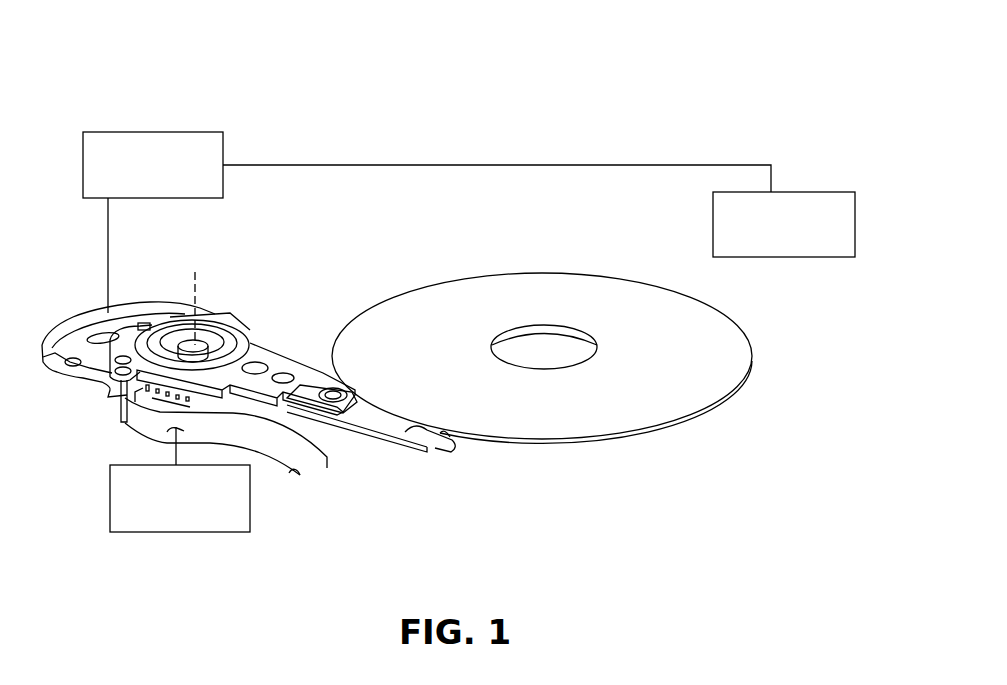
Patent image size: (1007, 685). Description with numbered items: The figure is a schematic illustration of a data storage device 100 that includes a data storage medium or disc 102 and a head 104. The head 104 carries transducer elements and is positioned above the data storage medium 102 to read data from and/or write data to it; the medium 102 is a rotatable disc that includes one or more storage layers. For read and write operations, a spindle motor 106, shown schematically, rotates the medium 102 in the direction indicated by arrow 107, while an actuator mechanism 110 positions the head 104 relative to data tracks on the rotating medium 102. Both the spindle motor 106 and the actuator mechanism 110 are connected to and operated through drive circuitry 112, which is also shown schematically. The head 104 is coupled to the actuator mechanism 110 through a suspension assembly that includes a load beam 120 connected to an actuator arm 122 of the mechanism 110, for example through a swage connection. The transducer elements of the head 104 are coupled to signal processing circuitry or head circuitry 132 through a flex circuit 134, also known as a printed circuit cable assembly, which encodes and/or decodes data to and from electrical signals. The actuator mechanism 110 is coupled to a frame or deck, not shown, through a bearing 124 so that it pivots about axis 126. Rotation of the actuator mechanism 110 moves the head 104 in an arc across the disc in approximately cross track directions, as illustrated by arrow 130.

The data storage device 100 is at (712, 66).
The data storage medium 102 is at (702, 322).
The head 104 is at (450, 442).
The spindle motor 106 is at (819, 192).
The arrow 107 is at (460, 295).
The actuator mechanism 110 is at (239, 311).
The drive circuitry 112 is at (193, 132).
The load beam 120 is at (358, 419).
The actuator arm 122 is at (302, 358).
The bearing 124 is at (158, 302).
The axis 126 is at (200, 283).
The arrow 130 is at (496, 420).
The head circuitry 132 is at (110, 500).
The flex circuit 134 is at (256, 438).